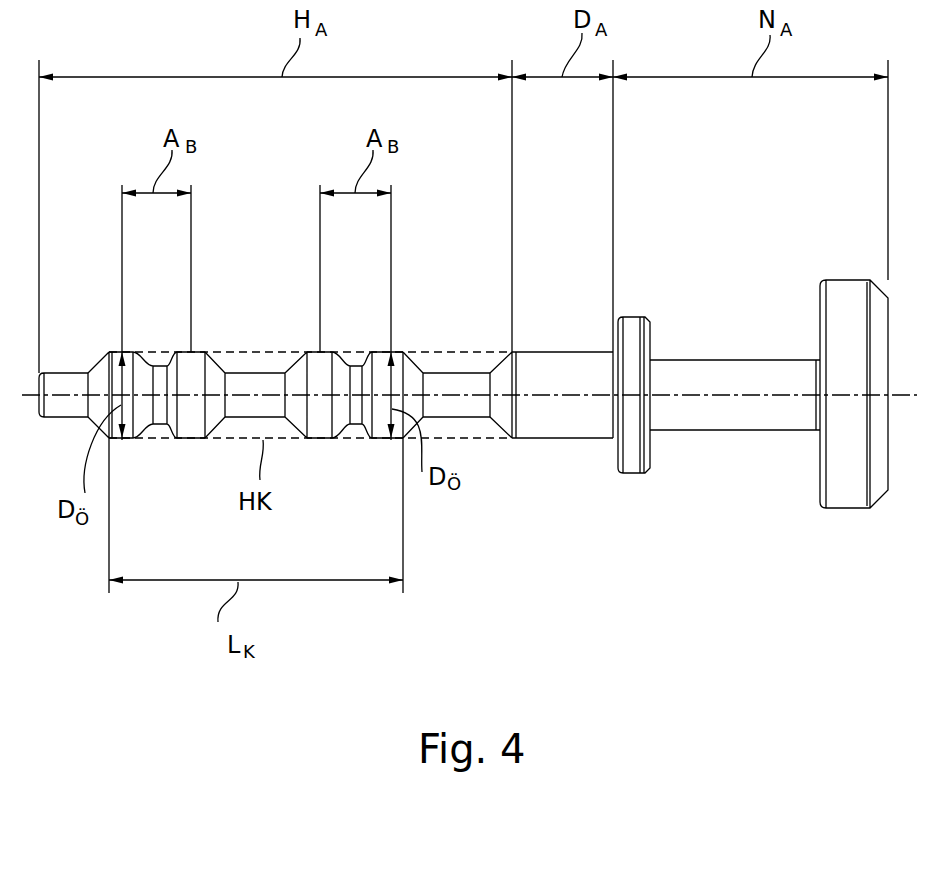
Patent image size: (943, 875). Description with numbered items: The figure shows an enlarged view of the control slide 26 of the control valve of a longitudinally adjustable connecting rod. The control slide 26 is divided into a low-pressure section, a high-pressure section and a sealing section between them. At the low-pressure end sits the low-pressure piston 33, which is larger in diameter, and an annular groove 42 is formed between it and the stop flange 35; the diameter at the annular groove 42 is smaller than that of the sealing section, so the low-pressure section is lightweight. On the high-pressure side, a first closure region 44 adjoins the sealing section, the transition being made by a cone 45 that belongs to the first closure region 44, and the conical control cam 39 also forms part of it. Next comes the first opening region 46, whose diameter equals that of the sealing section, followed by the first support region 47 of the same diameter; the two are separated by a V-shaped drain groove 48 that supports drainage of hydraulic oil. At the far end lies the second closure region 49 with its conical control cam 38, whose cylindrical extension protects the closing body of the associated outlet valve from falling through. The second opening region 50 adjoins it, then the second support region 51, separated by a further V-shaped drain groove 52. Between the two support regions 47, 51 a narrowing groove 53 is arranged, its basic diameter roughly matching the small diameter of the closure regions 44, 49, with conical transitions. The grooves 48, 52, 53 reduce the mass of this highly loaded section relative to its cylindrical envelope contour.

The control slide 26 is at (607, 500).
The low-pressure piston 33 is at (848, 280).
The stop flange 35 is at (633, 322).
The control cam 38 is at (96, 362).
The control cam 39 is at (418, 368).
The annular groove 42 is at (718, 360).
The first closure region 44 is at (463, 372).
The cone 45 is at (494, 430).
The first opening region 46 is at (387, 440).
The first support region 47 is at (322, 440).
The drain groove 48 is at (355, 366).
The second closure region 49 is at (57, 372).
The second opening region 50 is at (126, 440).
The second support region 51 is at (188, 440).
The drain groove 52 is at (156, 368).
The narrowing groove 53 is at (257, 373).